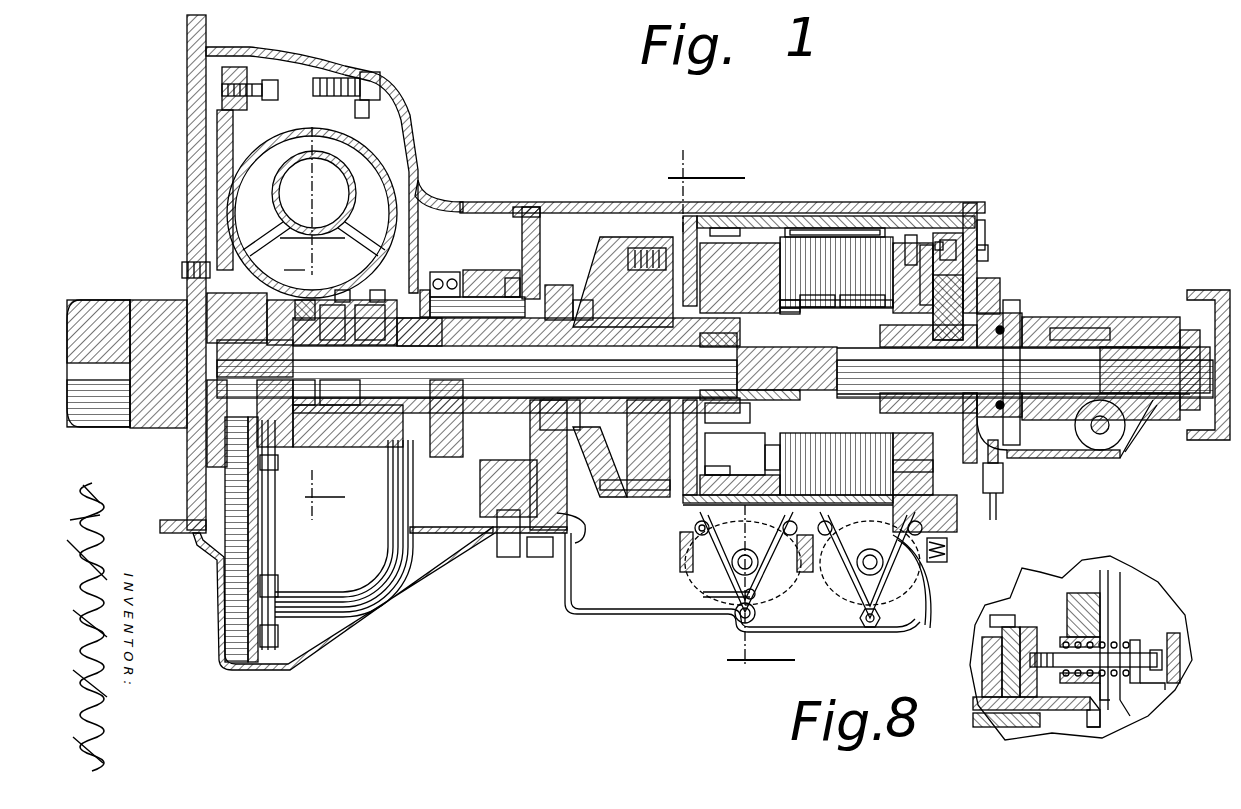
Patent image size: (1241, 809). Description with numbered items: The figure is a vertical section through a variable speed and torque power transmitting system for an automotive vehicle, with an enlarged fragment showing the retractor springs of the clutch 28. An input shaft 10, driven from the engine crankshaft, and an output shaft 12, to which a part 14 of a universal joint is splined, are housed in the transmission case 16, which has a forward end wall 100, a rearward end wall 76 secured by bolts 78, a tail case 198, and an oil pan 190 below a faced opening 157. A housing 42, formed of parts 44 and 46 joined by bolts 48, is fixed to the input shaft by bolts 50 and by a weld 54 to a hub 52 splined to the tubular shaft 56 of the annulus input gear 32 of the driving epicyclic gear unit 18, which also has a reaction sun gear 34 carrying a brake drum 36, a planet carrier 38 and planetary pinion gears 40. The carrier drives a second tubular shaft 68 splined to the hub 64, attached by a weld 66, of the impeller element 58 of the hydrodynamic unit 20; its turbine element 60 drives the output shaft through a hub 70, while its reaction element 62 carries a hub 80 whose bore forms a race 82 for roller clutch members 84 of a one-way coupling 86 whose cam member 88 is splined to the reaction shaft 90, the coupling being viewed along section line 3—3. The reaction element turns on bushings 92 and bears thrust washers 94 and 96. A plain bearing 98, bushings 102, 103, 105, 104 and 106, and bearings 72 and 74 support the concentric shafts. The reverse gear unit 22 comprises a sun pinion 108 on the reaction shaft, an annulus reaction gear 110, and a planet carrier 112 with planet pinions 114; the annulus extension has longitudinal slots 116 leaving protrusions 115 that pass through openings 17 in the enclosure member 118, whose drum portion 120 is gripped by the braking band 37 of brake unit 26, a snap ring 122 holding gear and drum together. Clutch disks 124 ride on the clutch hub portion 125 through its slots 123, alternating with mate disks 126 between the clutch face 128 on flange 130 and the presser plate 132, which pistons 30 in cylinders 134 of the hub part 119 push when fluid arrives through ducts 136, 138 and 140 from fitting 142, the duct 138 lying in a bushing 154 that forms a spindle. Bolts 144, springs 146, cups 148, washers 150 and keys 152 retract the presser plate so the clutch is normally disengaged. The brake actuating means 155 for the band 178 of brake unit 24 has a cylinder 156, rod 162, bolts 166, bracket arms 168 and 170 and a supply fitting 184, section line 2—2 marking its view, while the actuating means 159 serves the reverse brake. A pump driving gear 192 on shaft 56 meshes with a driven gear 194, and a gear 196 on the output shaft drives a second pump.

In FIG. 1, the section line 2- 2 is at (721, 412).
In FIG. 1, the section line 3— 3 is at (310, 374).
In FIG. 1, the input shaft 10 is at (110, 300).
In FIG. 1, the output shaft 12 is at (1160, 437).
In FIG. 1, the universal joint part 14 is at (1197, 300).
In FIG. 1, the transmission case 16 is at (575, 202).
In FIG. 1, the pin 17 is at (940, 242).
In FIG. 1, the driving epicyclic gear unit 18 is at (620, 237).
In FIG. 1, the fluid torque converter 20 is at (292, 175).
In FIG. 1, the reverse epicyclic gear unit 22 is at (752, 216).
In FIG. 1, the brake unit 24 is at (790, 230).
In FIG. 1, the brake unit 26 is at (940, 230).
In FIG. 1, the clutch 28 is at (865, 228).
In FIG. 1, the pistons 30 is at (985, 285).
In FIG. 1, the annulus input gear 32 is at (635, 507).
In FIG. 1, the reaction sun gear 34 is at (630, 495).
In FIG. 1, the brake drum 36 is at (695, 530).
In FIG. 1, the reaction braking band 37 is at (830, 228).
In FIG. 1, the planet carrier 38 is at (592, 470).
In FIG. 1, the planetary pinion gears 40 is at (645, 248).
In FIG. 1, the housing 42 is at (278, 84).
In FIG. 1, the housing part 44 is at (222, 168).
In FIG. 1, the housing part 46 is at (397, 140).
In FIG. 1, the bolts 48 is at (222, 92).
In FIG. 1, the bolts 50 is at (182, 270).
In FIG. 1, the hub 52 is at (490, 275).
In FIG. 1, the weld 54 is at (425, 290).
In FIG. 1, the tubular shaft portion 56 is at (445, 275).
In FIG. 1, the impeller element 58 is at (388, 170).
In FIG. 1, the turbine element 60 is at (217, 205).
In FIG. 1, the reaction element 62 is at (294, 262).
In FIG. 1, the hub portion 64 is at (350, 290).
In FIG. 1, the weld 66 is at (380, 292).
In FIG. 1, the second tubular shaft 68 is at (548, 290).
In FIG. 1, the hub 70 is at (240, 385).
In FIG. 1, the bearing 72 is at (145, 420).
In FIG. 1, the bearing 74 is at (1012, 322).
In FIG. 1, the rearward end wall 76 is at (980, 226).
In FIG. 8, the rearward end wall 76 is at (1182, 650).
In FIG. 1, the bolts 78 is at (985, 250).
In FIG. 1, the hub 80 is at (330, 447).
In FIG. 1, the annulus race 82 is at (288, 447).
In FIG. 1, the roller clutch members 84 is at (330, 337).
In FIG. 1, the one-way coupling device 86 is at (300, 337).
In FIG. 1, the cam member 88 is at (305, 395).
In FIG. 1, the reaction shaft 90 is at (482, 347).
In FIG. 1, the bearing bushings 92 is at (305, 300).
In FIG. 1, the thrust washer 94 is at (252, 322).
In FIG. 1, the thrust washer 96 is at (352, 385).
In FIG. 1, the plain bearing 98 is at (560, 420).
In FIG. 1, the forward end wall 100 is at (540, 232).
In FIG. 1, the bushing 102 is at (560, 300).
In FIG. 1, the bushing 103 is at (420, 337).
In FIG. 1, the bushing 104 is at (370, 337).
In FIG. 1, the bushing 105 is at (600, 335).
In FIG. 1, the bushing 106 is at (715, 340).
In FIG. 1, the driving sun pinion 108 is at (727, 414).
In FIG. 1, the annulus reaction gear 110 is at (722, 473).
In FIG. 1, the output planet carrier 112 is at (735, 454).
In FIG. 1, the planet pinions 114 is at (718, 268).
In FIG. 1, the protrusions 115 is at (775, 517).
In FIG. 8, the protrusions 115 is at (1020, 715).
In FIG. 1, the longitudinal slots 116 is at (950, 237).
In FIG. 1, the enclosure member 118 is at (958, 300).
In FIG. 8, the enclosure member 118 is at (1130, 716).
In FIG. 1, the hub part 119 is at (925, 245).
In FIG. 8, the hub part 119 is at (1075, 595).
In FIG. 1, the drum portion 120 is at (845, 237).
In FIG. 8, the drum portion 120 is at (1095, 716).
In FIG. 1, the snap ring 122 is at (975, 214).
In FIG. 1, the slots 123 is at (800, 324).
In FIG. 1, the clutch disks 124 is at (830, 310).
In FIG. 8, the clutch disks 124 is at (1000, 625).
In FIG. 1, the clutch hub portion 125 is at (795, 315).
In FIG. 8, the clutch hub portion 125 is at (1033, 625).
In FIG. 1, the mate clutch disks 126 is at (800, 235).
In FIG. 8, the mate clutch disks 126 is at (985, 715).
In FIG. 1, the clutch face 128 is at (805, 432).
In FIG. 1, the flange portion 130 is at (770, 458).
In FIG. 1, the presser clutch plate 132 is at (890, 240).
In FIG. 8, the presser clutch plate 132 is at (1060, 727).
In FIG. 1, the cylinders 134 is at (915, 235).
In FIG. 1, the duct 136 is at (860, 305).
In FIG. 1, the duct 138 is at (925, 347).
In FIG. 1, the duct 140 is at (1075, 428).
In FIG. 1, the fluid pressure supply fitting 142 is at (1003, 480).
In FIG. 8, the bolts 144 is at (1060, 652).
In FIG. 8, the springs 146 is at (1120, 705).
In FIG. 8, the cups 148 is at (1112, 600).
In FIG. 8, the washer 150 is at (1158, 688).
In FIG. 8, the thrust sustaining key 152 is at (1138, 650).
In FIG. 1, the bushing 154 is at (892, 345).
In FIG. 1, the brake actuating means 155 is at (690, 568).
In FIG. 1, the cylinder 156 is at (705, 597).
In FIG. 1, the faced under-side opening 157 is at (575, 514).
In FIG. 1, the brake actuating means 159 is at (932, 604).
In FIG. 1, the rod 162 is at (840, 605).
In FIG. 1, the bolts 166 is at (732, 625).
In FIG. 1, the bracket arm 168 is at (680, 555).
In FIG. 1, the bracket arm 170 is at (820, 575).
In FIG. 1, the brake band 178 is at (725, 216).
In FIG. 1, the fluid pressure supply fitting 184 is at (760, 628).
In FIG. 1, the oil pan 190 is at (565, 577).
In FIG. 1, the driving gear 192 is at (515, 270).
In FIG. 1, the driven gear 194 is at (470, 458).
In FIG. 1, the gear 196 is at (1060, 322).
In FIG. 1, the tail case 198 is at (1120, 320).